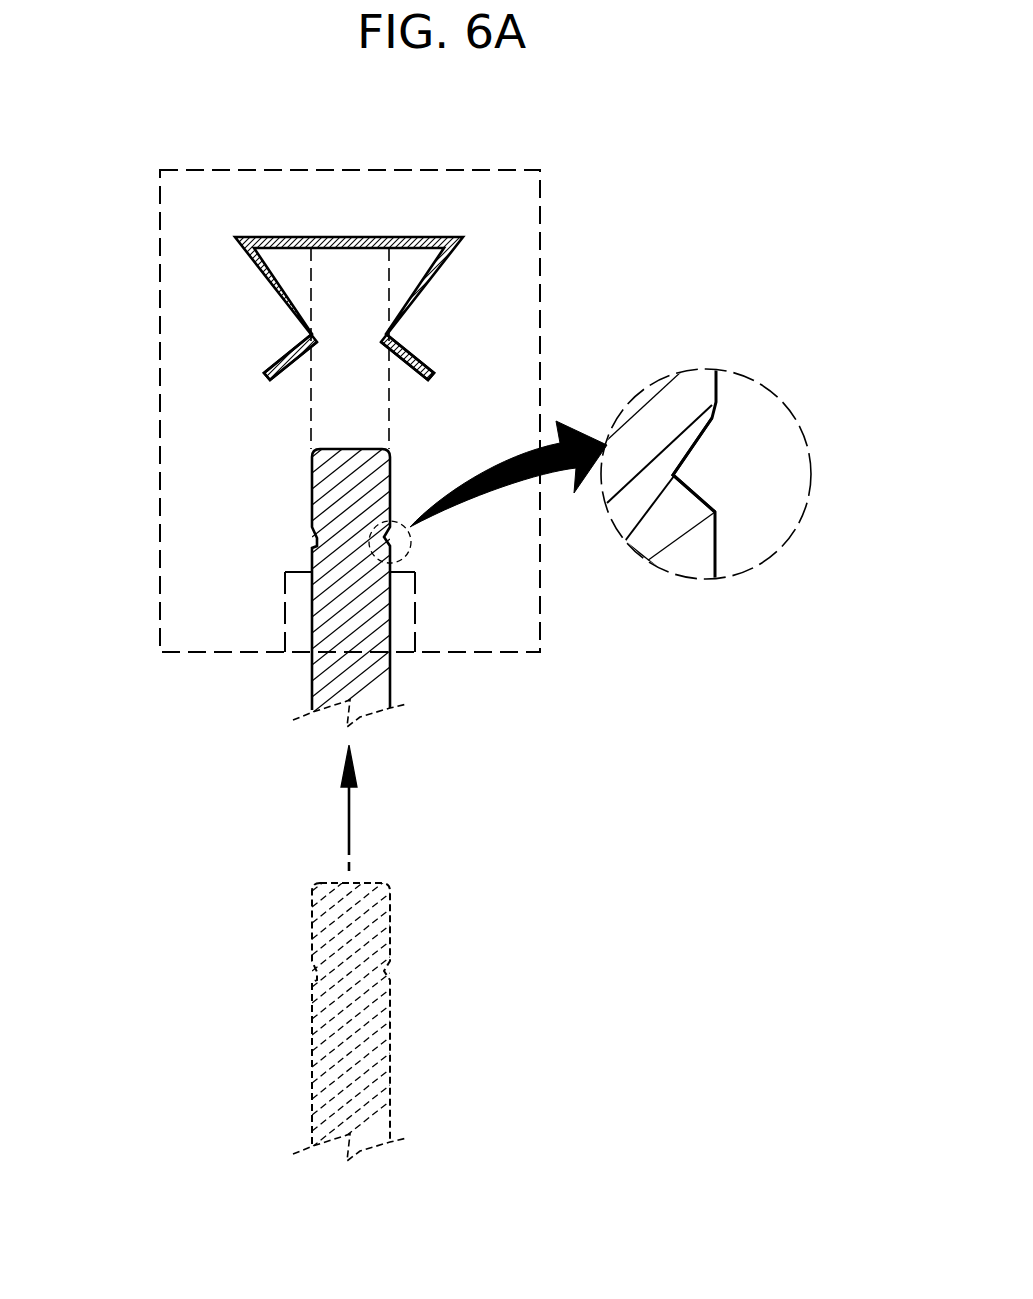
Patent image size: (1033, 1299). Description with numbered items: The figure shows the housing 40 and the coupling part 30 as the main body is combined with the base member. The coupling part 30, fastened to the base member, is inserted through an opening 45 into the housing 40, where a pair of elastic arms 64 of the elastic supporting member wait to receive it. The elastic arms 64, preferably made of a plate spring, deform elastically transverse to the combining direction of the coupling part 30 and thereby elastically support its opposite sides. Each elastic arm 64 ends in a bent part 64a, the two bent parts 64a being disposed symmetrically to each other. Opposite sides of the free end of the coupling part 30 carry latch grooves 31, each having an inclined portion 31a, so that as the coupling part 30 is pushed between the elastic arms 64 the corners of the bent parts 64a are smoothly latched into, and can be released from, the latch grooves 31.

The coupling part 30 is at (392, 632).
The latch groove 31 is at (633, 548).
The inclined portion 31a is at (676, 477).
The housing 40 is at (540, 255).
The opening 45 is at (298, 577).
The elastic arm 64 is at (262, 274).
The bent part 64a is at (317, 340).